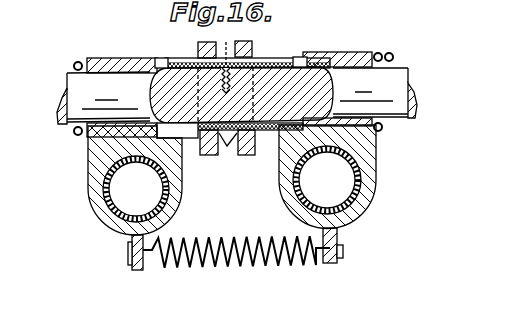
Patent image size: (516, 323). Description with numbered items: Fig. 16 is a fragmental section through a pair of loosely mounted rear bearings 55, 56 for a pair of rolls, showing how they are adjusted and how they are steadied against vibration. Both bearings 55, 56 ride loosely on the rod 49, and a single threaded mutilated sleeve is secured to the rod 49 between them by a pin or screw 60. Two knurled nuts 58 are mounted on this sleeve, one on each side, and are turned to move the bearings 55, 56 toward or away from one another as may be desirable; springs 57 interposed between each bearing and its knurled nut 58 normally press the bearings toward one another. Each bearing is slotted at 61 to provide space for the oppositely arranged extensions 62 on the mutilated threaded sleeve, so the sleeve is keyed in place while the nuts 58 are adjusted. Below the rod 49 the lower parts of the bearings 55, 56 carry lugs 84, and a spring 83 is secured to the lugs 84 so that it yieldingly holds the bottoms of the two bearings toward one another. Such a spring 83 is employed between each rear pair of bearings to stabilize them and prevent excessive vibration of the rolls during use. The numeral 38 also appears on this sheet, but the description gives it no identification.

The sheet marker 38 is at (73, 12).
The rod 49 is at (60, 99).
The bearing 55 is at (88, 185).
The bearing 56 is at (101, 58).
The spring 57 is at (75, 65).
The knurled nut 58 is at (200, 44).
The pin or screw 60 is at (227, 58).
The slot 61 is at (160, 62).
The extension 62 is at (178, 64).
The spring 83 is at (226, 270).
The lug 84 is at (137, 272).